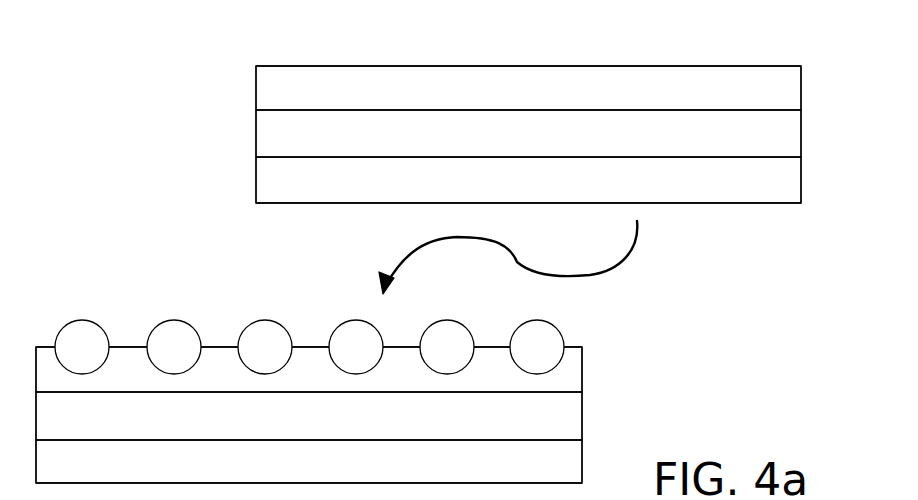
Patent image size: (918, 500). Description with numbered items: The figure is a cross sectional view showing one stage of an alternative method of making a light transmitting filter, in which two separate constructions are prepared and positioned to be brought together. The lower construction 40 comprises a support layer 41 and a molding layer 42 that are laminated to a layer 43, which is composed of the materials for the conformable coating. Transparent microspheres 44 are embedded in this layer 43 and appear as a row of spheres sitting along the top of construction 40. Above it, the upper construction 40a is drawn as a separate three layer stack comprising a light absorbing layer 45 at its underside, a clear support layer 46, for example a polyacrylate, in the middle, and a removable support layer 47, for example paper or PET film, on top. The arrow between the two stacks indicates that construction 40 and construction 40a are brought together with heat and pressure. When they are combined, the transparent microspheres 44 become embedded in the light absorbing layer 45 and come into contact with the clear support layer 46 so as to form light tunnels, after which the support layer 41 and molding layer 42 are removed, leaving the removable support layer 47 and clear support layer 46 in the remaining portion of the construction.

The construction 40 is at (283, 302).
The construction 40a is at (621, 55).
The support layer 41 is at (573, 465).
The molding layer 42 is at (573, 413).
The layer 43 is at (573, 367).
The transparent microspheres 44 is at (546, 338).
The light absorbing layer 45 is at (792, 182).
The clear support layer 46 is at (792, 140).
The removable support layer 47 is at (784, 86).